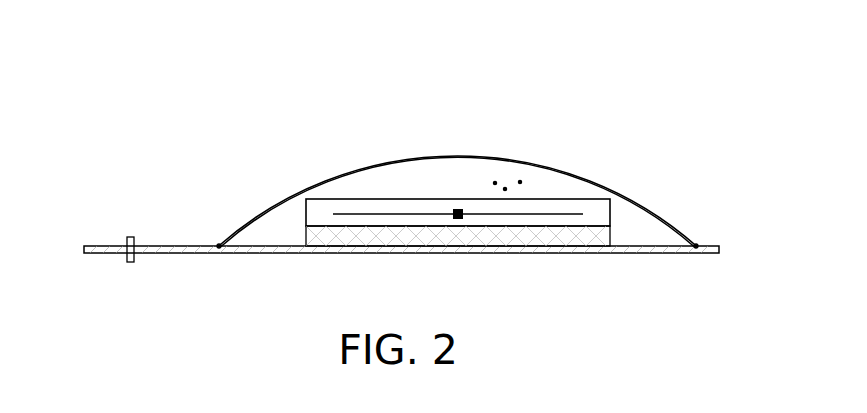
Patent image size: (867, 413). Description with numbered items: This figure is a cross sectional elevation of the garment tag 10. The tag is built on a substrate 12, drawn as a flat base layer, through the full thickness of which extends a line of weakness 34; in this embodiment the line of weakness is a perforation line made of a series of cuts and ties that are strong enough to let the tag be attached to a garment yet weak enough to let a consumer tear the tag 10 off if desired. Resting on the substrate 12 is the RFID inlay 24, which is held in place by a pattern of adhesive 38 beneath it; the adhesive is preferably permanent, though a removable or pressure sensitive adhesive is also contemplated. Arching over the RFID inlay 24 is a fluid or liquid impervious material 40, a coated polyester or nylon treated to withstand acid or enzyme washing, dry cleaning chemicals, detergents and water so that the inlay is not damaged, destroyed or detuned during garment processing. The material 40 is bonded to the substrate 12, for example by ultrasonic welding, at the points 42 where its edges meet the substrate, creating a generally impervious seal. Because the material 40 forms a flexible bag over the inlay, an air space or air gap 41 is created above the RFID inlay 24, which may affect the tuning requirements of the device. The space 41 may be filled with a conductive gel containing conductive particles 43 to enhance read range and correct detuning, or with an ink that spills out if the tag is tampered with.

The garment tag 10 is at (587, 122).
The substrate 12 is at (95, 254).
The RFID inlay 24 is at (586, 212).
The line of weakness 34 is at (130, 237).
The pattern of adhesive 38 is at (508, 238).
The fluid impervious material 40 is at (373, 166).
The air gap 41 is at (453, 172).
The dome edge attachment 42 is at (218, 246).
The conductive particles 43 is at (506, 188).